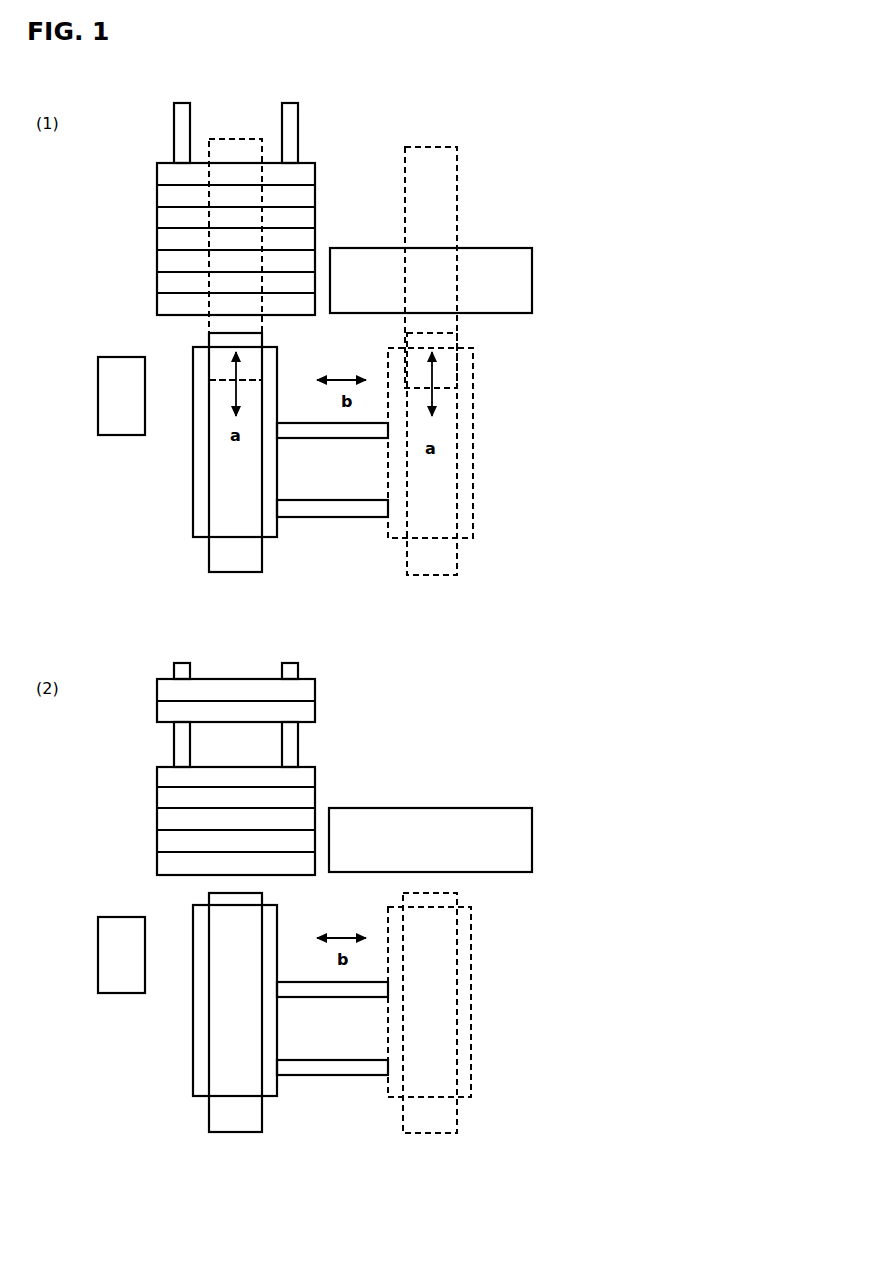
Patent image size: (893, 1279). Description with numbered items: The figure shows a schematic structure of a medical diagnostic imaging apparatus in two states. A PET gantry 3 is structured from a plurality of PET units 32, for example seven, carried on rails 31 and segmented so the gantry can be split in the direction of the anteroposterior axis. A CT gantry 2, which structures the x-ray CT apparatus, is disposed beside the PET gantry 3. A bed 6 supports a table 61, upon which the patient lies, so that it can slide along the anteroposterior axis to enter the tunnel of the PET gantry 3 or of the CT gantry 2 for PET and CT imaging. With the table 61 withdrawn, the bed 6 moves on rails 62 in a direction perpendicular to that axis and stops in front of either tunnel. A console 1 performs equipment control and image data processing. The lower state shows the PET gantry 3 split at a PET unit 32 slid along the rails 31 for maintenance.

The console 1 is at (127, 420).
The CT gantry 2 is at (503, 262).
The PET gantry 3 is at (148, 161).
The rails 31 is at (298, 110).
The PET units 32 is at (307, 175).
The bed 6 is at (179, 496).
The table 61 is at (216, 557).
The rails 62 is at (345, 511).